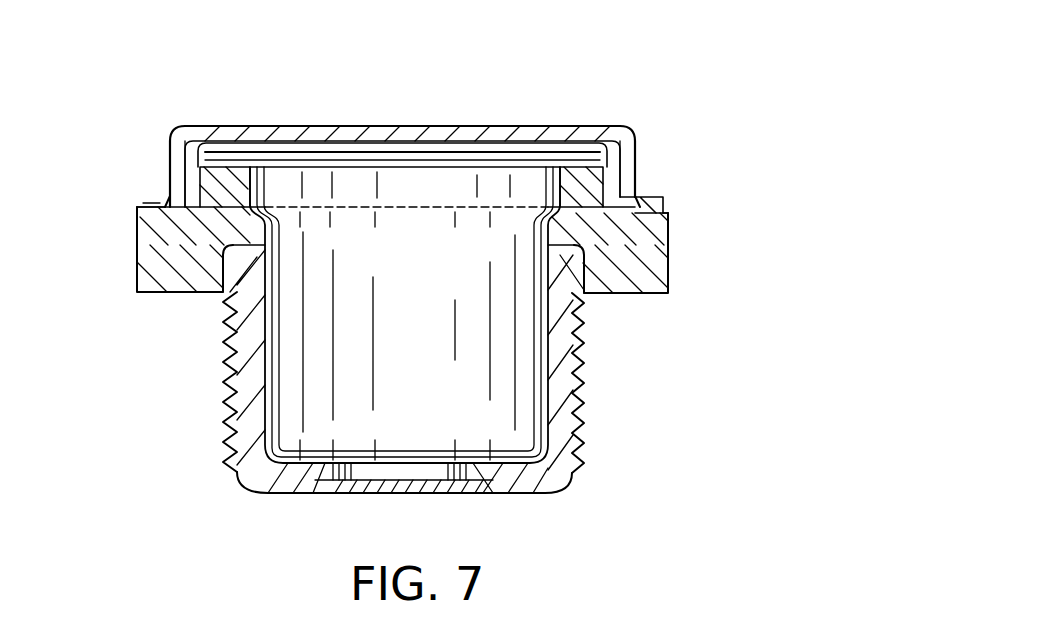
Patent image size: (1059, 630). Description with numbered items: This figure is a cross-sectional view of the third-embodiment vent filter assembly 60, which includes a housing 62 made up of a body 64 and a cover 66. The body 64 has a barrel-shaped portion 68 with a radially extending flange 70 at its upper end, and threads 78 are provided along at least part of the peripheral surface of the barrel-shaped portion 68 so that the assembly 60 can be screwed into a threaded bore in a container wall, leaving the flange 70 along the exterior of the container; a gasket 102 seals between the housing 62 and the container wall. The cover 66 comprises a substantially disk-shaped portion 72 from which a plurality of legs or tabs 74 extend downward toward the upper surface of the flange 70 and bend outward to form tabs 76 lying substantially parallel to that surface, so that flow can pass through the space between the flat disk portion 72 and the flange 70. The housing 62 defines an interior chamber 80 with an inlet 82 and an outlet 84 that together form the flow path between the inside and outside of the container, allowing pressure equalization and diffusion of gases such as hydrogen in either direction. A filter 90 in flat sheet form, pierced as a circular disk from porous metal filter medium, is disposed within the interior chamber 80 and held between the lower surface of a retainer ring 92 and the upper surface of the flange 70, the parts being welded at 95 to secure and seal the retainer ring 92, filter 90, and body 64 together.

The vent filter assembly 60 is at (419, 289).
The housing 62 is at (670, 221).
The body 64 is at (575, 302).
The cover 66 is at (636, 160).
The barrel-shaped portion 68 is at (243, 430).
The flange 70 is at (137, 233).
The disk-shaped portion 72 is at (604, 128).
The tabs 74 is at (170, 166).
The tabs 76 is at (143, 204).
The threads 78 is at (575, 402).
The interior chamber 80 is at (263, 358).
The inlet 82 is at (466, 495).
The outlet 84 is at (608, 200).
The filter 90 is at (285, 178).
The retainer ring 92 is at (170, 148).
The weld 95 is at (670, 243).
The gasket 102 is at (670, 275).